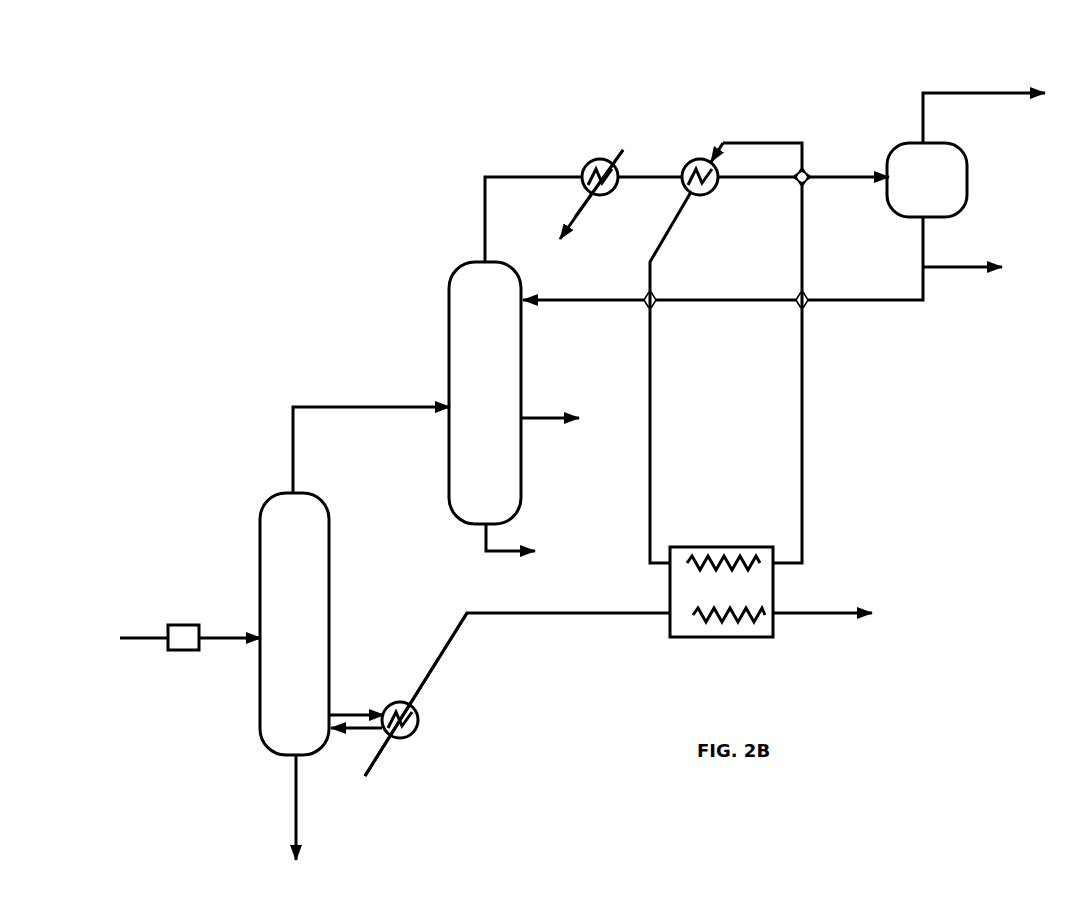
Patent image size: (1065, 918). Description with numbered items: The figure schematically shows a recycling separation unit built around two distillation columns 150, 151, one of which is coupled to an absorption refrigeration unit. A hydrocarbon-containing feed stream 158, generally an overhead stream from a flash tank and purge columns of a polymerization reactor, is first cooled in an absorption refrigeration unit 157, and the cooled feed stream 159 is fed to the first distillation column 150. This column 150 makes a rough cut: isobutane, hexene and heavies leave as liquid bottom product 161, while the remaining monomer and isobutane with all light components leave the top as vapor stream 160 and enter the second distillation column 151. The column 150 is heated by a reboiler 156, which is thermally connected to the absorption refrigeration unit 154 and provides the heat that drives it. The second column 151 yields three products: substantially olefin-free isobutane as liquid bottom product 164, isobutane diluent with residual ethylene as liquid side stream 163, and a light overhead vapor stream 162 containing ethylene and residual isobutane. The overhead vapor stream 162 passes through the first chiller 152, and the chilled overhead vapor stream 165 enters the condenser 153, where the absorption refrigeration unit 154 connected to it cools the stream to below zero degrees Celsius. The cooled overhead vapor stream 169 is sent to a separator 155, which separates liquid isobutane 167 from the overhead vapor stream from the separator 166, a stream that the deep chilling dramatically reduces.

The first distillation column 150 is at (329, 628).
The second distillation column 151 is at (508, 393).
The first chiller 152 is at (596, 166).
The condenser 153 is at (700, 164).
The absorption refrigeration unit 154 is at (748, 585).
The separator 155 is at (962, 188).
The reboiler 156 is at (416, 724).
The absorption refrigeration unit 157 is at (190, 633).
The hydrocarbon-containing feed stream 158 is at (128, 637).
The cooled feed stream 159 is at (232, 637).
The vapor stream 160 is at (423, 405).
The liquid bottom product 161 is at (296, 784).
The overhead vapor stream 162 is at (536, 176).
The liquid side stream 163 is at (550, 420).
The liquid bottom product 164 is at (486, 549).
The chilled overhead vapor stream 165 is at (632, 176).
The overhead vapor stream from the separator 166 is at (955, 92).
The liquid isobutane 167 is at (952, 268).
The cooled overhead vapor stream 169 is at (836, 176).